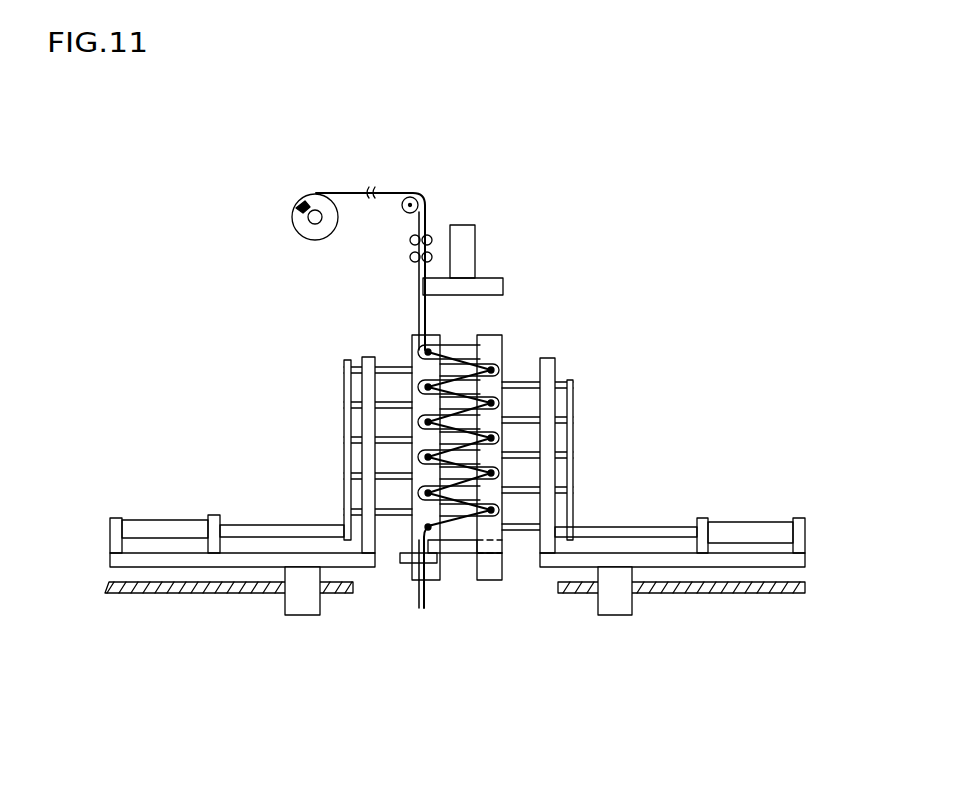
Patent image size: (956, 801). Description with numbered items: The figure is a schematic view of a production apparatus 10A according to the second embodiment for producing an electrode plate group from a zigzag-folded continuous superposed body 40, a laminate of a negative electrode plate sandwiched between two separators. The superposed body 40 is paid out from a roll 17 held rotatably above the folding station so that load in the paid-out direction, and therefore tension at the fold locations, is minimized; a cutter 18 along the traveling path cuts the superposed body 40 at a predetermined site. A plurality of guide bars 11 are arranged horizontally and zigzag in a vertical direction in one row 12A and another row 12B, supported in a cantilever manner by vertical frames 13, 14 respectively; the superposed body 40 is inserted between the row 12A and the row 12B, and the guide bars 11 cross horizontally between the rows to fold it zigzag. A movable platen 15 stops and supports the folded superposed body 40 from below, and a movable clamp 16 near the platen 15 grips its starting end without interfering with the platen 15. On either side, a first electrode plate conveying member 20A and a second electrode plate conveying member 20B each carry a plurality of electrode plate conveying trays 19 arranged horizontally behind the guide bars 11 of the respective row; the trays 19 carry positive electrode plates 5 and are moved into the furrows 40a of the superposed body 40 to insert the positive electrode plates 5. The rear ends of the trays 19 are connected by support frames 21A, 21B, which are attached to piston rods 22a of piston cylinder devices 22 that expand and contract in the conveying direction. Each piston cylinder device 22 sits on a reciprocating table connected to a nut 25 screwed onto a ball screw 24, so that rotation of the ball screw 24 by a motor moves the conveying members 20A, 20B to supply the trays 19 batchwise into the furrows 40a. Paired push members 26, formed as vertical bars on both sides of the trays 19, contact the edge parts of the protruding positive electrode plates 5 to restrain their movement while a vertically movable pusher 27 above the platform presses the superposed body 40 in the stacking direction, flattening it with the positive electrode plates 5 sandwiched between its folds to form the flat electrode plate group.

The production apparatus 10A is at (720, 213).
The superposed body 40 is at (424, 222).
The roll 17 is at (292, 224).
The cutter 18 is at (410, 250).
The pusher 27 is at (474, 248).
The guide bars 11 is at (436, 338).
The vertical frame 13 is at (493, 570).
The vertical frame 14 is at (432, 583).
The platen 15 is at (456, 553).
The clamp 16 is at (405, 563).
The positive electrode plates 5 is at (390, 362).
The furrows 40a is at (405, 430).
The electrode plate conveying trays 19 is at (343, 372).
The first electrode plate conveying member 20A is at (327, 351).
The second electrode plate conveying member 20B is at (597, 370).
The support frame 21A is at (573, 483).
The support frame 21B is at (345, 515).
The piston cylinder devices 22 is at (160, 520).
The piston rods 22a is at (258, 527).
The ball screw 24 is at (160, 595).
The nut 25 is at (305, 600).
The push members 26 is at (366, 352).
The row 12A is at (492, 648).
The row 12B is at (425, 648).